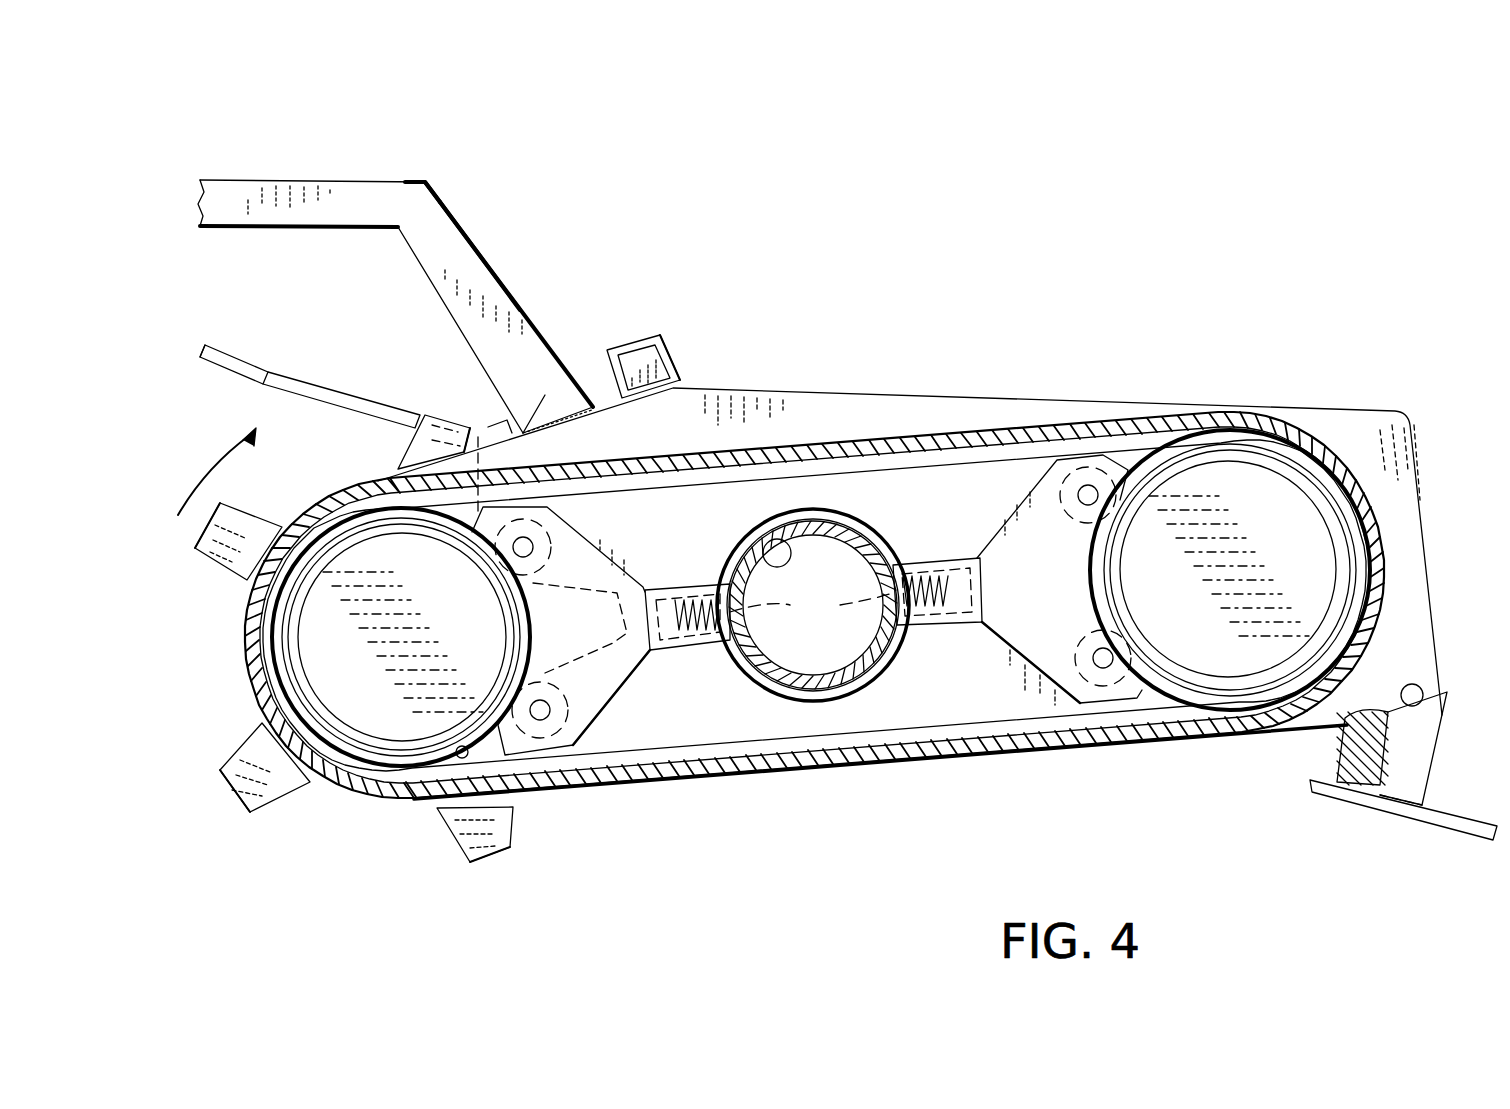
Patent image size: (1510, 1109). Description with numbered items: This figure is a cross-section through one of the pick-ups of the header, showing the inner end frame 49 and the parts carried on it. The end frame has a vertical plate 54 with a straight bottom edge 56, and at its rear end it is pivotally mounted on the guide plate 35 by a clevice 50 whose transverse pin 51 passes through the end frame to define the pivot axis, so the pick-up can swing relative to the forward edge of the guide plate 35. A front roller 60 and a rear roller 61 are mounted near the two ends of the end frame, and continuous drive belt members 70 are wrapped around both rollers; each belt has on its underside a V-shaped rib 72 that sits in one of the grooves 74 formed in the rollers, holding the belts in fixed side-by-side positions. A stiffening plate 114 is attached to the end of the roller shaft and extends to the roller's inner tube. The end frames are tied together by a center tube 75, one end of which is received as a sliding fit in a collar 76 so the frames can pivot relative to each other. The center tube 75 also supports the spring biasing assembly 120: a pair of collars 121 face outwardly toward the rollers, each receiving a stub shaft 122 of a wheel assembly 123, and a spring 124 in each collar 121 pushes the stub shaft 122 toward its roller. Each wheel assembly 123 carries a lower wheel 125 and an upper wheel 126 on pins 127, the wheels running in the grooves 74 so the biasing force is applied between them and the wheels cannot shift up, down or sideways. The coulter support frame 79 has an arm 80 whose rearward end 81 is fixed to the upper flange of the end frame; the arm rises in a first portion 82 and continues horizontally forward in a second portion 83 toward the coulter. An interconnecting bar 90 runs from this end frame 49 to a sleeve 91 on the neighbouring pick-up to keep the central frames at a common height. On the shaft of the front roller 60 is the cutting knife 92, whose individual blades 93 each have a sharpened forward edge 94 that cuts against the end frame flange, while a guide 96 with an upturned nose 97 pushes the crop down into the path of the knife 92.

The guide plate 35 is at (1437, 833).
The inner end frame 49 is at (874, 380).
The clevice 50 is at (1418, 750).
The transverse pin 51 is at (1416, 690).
The vertical plate 54 is at (778, 415).
The straight bottom edge 56 is at (945, 760).
The front roller 60 is at (356, 770).
The rear roller 61 is at (1302, 466).
The drive belt member 70 is at (958, 442).
The V-shaped rib 72 is at (690, 495).
The groove 74 is at (458, 748).
The center tube 75 is at (764, 552).
The collar 76 is at (846, 517).
The coulter support frame 79 is at (445, 192).
The arm 80 is at (512, 290).
The rearward end 81 is at (554, 398).
The first portion 82 is at (467, 242).
The second portion 83 is at (265, 180).
The interconnecting bar 90 is at (643, 360).
The sleeve 91 is at (672, 364).
The cutting knife 92 is at (240, 820).
The blade 93 is at (410, 440).
The forward edge 94 is at (250, 510).
The guide 96 is at (312, 385).
The upturned nose 97 is at (218, 350).
The stiffening plate 114 is at (402, 610).
The spring biasing assembly 120 is at (640, 718).
The collar 121 is at (673, 590).
The stub shaft 122 is at (658, 600).
The wheel assembly 123 is at (630, 688).
The spring 124 is at (811, 607).
The lower wheel 125 is at (1112, 500).
The upper wheel 126 is at (1082, 496).
The pin 127 is at (1097, 658).